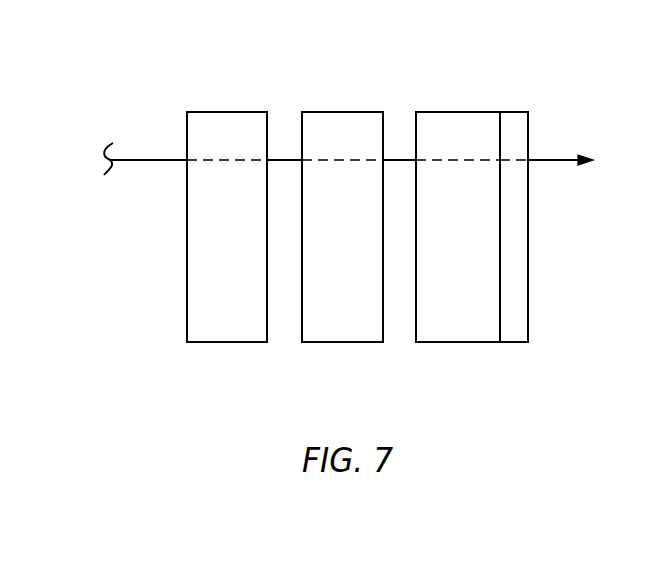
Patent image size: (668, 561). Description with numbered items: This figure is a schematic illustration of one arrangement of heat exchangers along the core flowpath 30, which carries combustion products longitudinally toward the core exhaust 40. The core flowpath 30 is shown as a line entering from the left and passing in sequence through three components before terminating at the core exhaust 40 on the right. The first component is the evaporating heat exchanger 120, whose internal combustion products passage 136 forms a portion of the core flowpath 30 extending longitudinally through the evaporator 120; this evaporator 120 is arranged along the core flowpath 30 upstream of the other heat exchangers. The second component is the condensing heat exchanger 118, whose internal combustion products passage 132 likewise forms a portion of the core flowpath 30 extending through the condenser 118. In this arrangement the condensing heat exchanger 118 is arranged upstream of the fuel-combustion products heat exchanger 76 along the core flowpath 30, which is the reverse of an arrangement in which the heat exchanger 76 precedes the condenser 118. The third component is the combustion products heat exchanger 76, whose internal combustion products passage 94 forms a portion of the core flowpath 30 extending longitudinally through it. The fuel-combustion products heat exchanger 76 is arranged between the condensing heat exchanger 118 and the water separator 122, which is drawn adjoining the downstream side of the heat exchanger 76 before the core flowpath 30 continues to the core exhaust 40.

The core flowpath 30 is at (138, 160).
The core exhaust 40 is at (592, 160).
The evaporating heat exchanger 120 is at (225, 342).
The internal combustion products passage 136 is at (225, 160).
The condensing heat exchanger 118 is at (349, 342).
The internal combustion products passage 132 is at (342, 160).
The combustion products heat exchanger 76 is at (452, 342).
The internal combustion products passage 94 is at (453, 160).
The water separator 122 is at (528, 246).